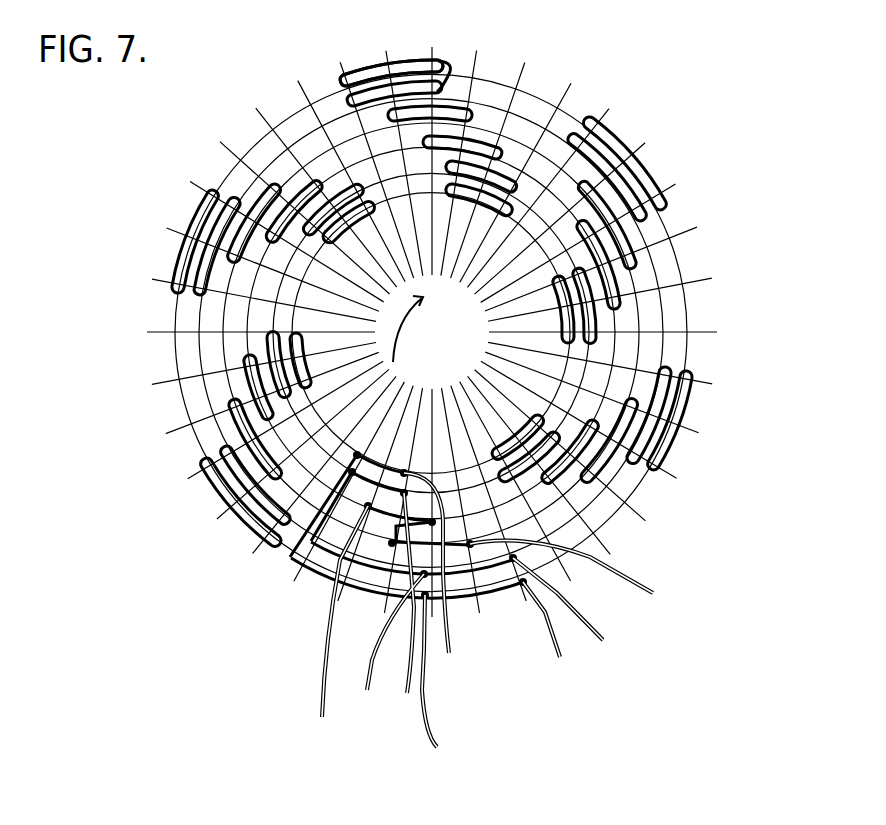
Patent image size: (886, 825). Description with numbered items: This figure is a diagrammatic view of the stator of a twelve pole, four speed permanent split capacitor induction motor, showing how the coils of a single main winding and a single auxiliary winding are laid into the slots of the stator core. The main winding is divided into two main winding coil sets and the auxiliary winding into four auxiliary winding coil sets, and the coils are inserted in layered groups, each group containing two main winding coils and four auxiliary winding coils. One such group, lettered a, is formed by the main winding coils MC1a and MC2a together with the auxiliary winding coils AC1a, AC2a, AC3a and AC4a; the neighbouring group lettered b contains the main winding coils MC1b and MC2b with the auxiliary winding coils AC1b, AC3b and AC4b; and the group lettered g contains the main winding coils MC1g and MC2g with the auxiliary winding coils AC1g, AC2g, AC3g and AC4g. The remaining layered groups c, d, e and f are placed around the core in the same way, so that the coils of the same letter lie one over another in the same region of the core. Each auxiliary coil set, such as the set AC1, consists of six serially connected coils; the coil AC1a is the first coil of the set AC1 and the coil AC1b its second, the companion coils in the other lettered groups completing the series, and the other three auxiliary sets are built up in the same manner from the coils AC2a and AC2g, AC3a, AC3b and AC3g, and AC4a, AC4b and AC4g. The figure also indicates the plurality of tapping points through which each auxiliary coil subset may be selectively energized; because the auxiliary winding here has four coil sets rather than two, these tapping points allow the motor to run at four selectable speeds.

The auxiliary winding coil set AC1 is at (410, 47).
The auxiliary winding coil AC1a is at (418, 55).
The auxiliary winding coil AC2a is at (437, 88).
The main winding coil MC1a is at (443, 117).
The main winding coil MC2a is at (475, 150).
The auxiliary winding coil AC3a is at (487, 203).
The auxiliary winding coil AC4a is at (507, 187).
The auxiliary winding coil AC1g is at (617, 147).
The auxiliary winding coil AC2g is at (627, 190).
The main winding coil MC1g is at (620, 243).
The main winding coil MC2g is at (610, 290).
The auxiliary winding coil AC3g is at (590, 323).
The auxiliary winding coil AC4g is at (567, 338).
The auxiliary winding coil AC4b is at (368, 200).
The auxiliary winding coil AC3b is at (346, 190).
The main winding coil MC2b is at (222, 222).
The main winding coil MC1b is at (266, 203).
The auxiliary winding coil AC1b is at (190, 256).
The layered coil group c is at (253, 439).
The layered coil group d is at (405, 599).
The layered coil group e is at (559, 598).
The layered coil group f is at (599, 425).